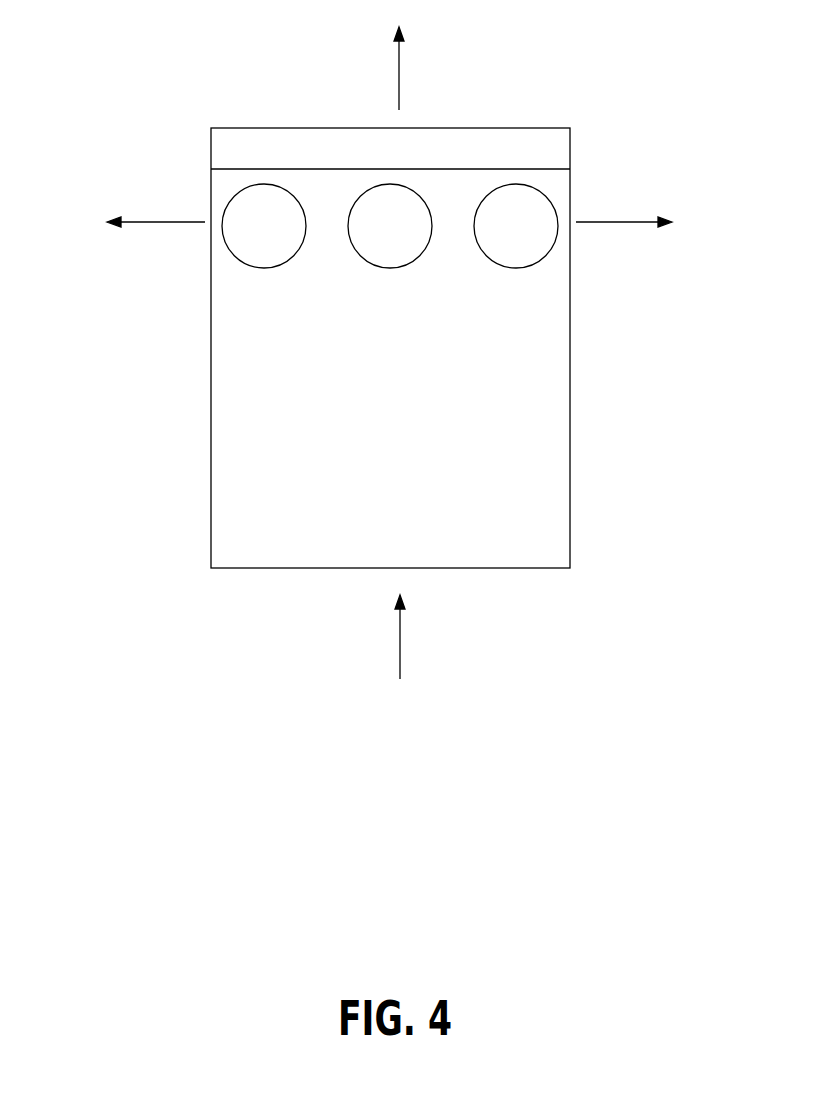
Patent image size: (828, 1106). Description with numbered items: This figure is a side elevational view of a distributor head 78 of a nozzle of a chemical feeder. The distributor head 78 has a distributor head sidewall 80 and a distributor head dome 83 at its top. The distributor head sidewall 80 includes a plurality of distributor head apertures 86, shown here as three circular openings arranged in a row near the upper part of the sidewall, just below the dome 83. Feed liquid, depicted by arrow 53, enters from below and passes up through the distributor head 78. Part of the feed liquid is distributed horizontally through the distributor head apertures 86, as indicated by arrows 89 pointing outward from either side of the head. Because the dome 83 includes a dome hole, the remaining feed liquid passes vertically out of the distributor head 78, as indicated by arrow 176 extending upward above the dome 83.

The distributor head 78 is at (103, 393).
The distributor head sidewall 80 is at (552, 433).
The distributor head dome 83 is at (553, 147).
The distributor head apertures 86 is at (260, 253).
The arrows indicating horizontal feed liquid distribution 89 is at (168, 223).
The arrow indicating vertical feed liquid flow 176 is at (399, 81).
The arrow indicating feed liquid introduction 53 is at (400, 634).